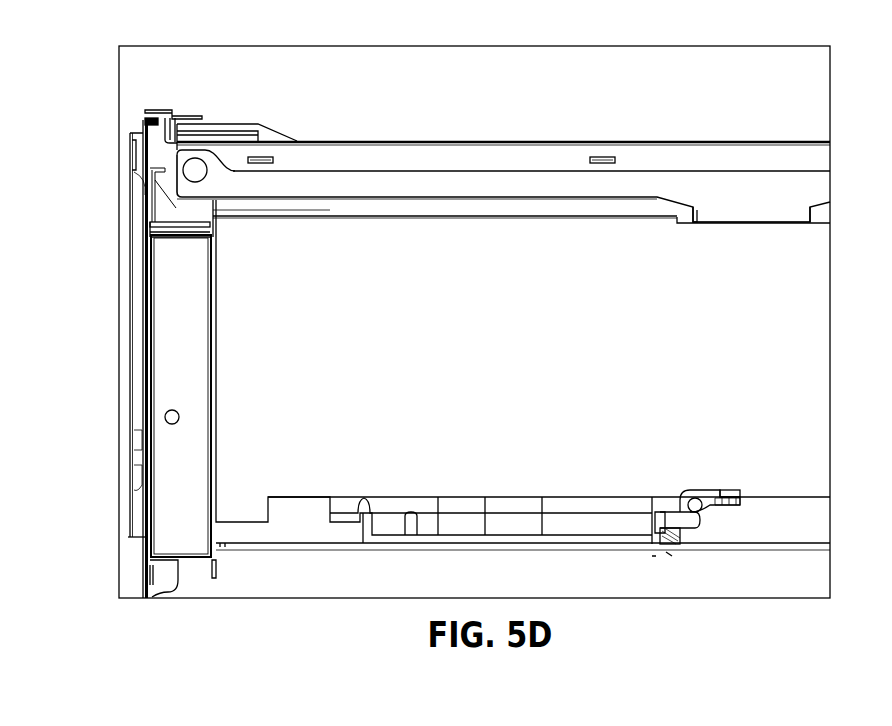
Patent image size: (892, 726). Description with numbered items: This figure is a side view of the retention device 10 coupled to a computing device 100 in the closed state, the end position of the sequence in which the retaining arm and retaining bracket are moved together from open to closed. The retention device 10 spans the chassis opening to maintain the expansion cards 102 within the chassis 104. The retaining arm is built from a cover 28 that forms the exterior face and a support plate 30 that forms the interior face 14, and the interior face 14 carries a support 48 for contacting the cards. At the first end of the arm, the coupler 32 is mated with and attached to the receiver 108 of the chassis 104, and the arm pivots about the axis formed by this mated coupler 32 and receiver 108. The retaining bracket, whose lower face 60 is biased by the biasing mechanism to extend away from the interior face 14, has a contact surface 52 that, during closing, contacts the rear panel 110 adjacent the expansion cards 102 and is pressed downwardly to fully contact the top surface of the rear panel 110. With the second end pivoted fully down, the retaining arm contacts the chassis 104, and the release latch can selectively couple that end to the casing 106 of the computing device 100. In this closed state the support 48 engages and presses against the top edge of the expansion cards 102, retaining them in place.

The computing device 100 is at (98, 77).
The retention device 10 is at (420, 125).
The cover 28 is at (708, 158).
The support plate 30 is at (510, 192).
The interior face 14 is at (403, 202).
The support 48 is at (707, 200).
The contact surface 52 is at (168, 240).
The lower face 60 is at (218, 213).
The receiver 108 is at (175, 113).
The coupler 32 is at (143, 121).
The chassis 104 is at (145, 308).
The casing 106 is at (128, 363).
The rear panel 110 is at (168, 380).
The expansion cards 102 is at (509, 368).